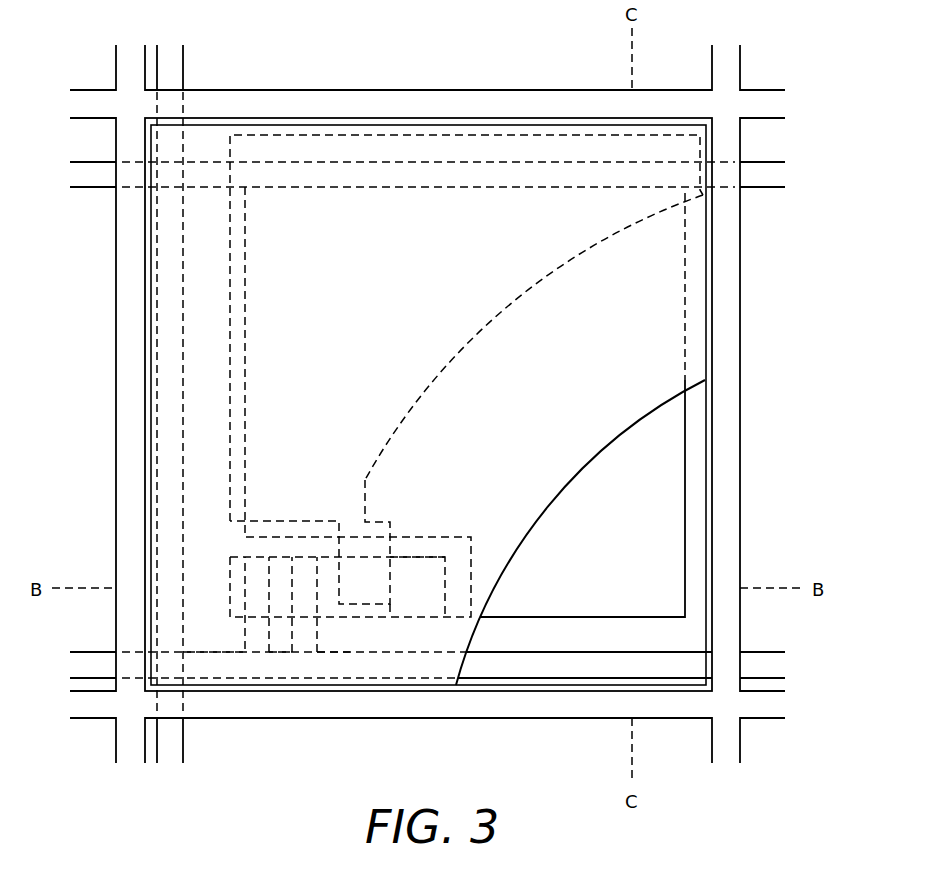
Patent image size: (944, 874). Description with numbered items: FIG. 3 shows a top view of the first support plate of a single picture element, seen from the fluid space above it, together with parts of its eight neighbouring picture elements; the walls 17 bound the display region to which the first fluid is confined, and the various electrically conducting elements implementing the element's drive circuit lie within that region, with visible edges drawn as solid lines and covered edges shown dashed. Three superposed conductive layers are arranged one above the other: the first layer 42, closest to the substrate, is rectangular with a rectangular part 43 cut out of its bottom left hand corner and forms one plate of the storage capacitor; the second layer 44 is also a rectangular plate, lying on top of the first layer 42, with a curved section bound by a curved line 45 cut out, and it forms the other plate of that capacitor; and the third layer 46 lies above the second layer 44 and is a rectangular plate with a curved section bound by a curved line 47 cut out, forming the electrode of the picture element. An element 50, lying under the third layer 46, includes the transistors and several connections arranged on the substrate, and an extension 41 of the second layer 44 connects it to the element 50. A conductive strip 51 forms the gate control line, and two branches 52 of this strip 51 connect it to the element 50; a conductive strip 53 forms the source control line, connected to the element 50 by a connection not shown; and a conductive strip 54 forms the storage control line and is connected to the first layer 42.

The walls 17 is at (723, 50).
The extension 41 is at (364, 604).
The first layer 42 is at (675, 498).
The rectangular part 43 is at (430, 526).
The second layer 44 is at (661, 214).
The curved line 45 is at (603, 242).
The third layer 46 is at (698, 365).
The curved line 47 is at (613, 443).
The element 50 is at (397, 563).
The conductive strip 51 is at (775, 666).
The branches 52 is at (257, 568).
The conductive strip 53 is at (167, 758).
The conductive strip 54 is at (775, 176).